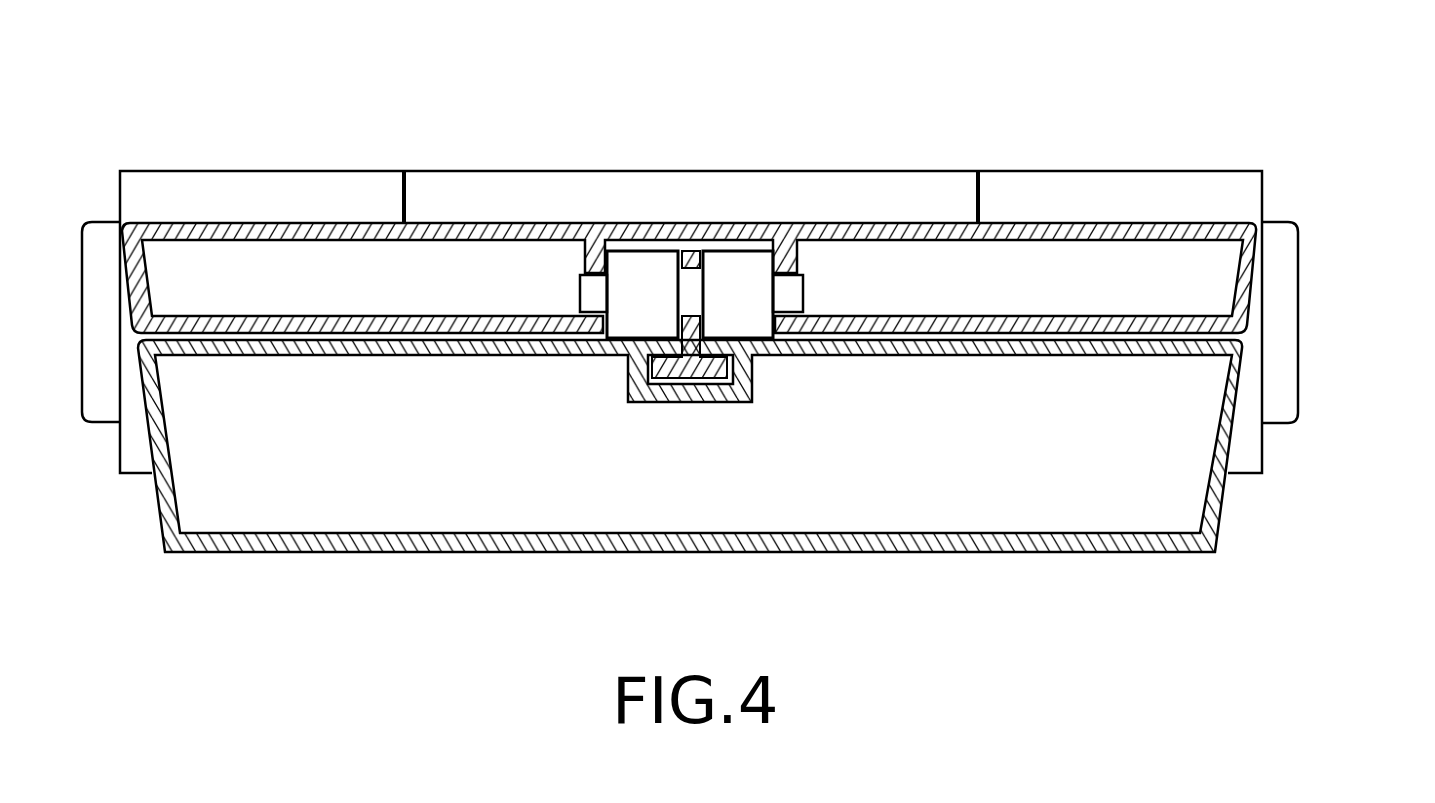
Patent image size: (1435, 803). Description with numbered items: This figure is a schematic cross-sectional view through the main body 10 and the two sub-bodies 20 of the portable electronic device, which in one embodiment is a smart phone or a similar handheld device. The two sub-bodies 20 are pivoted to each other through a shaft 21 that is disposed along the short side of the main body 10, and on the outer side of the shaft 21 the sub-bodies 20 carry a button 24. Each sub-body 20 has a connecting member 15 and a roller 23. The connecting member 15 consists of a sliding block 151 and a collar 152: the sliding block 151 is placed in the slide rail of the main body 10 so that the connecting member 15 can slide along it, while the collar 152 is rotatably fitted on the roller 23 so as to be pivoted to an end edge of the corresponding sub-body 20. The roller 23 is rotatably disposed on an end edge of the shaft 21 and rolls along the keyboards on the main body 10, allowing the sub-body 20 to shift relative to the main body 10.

The main body 10 is at (1148, 553).
The connecting member 15 is at (583, 369).
The sliding block 151 is at (694, 370).
The collar 152 is at (685, 260).
The sub-body 20 is at (1220, 224).
The shaft 21 is at (1037, 185).
The roller 23 is at (741, 268).
The button 24 is at (1290, 325).